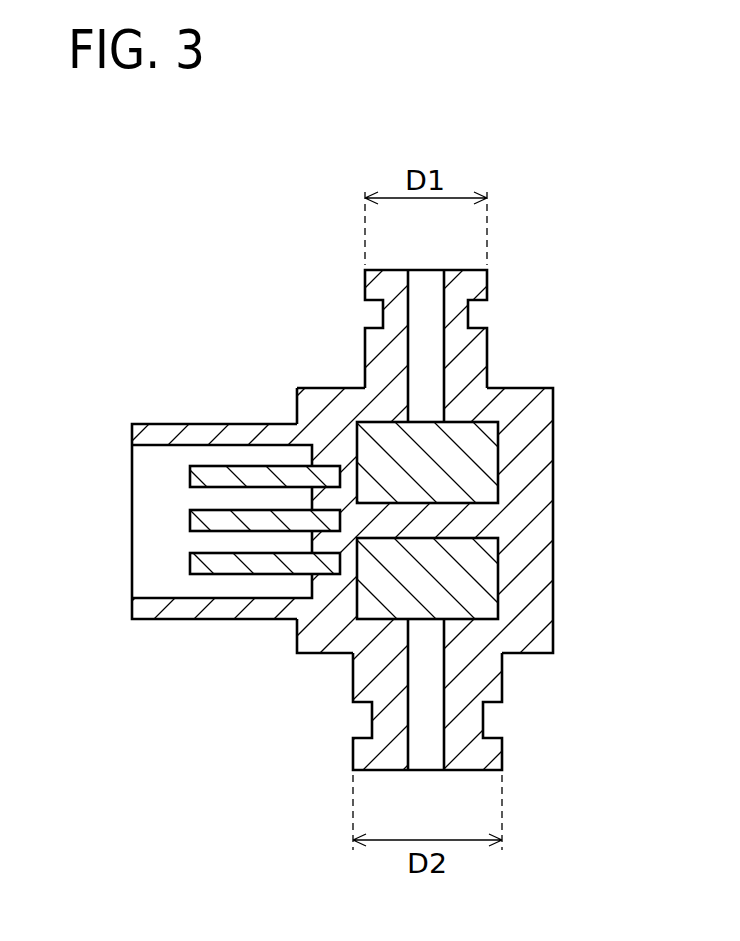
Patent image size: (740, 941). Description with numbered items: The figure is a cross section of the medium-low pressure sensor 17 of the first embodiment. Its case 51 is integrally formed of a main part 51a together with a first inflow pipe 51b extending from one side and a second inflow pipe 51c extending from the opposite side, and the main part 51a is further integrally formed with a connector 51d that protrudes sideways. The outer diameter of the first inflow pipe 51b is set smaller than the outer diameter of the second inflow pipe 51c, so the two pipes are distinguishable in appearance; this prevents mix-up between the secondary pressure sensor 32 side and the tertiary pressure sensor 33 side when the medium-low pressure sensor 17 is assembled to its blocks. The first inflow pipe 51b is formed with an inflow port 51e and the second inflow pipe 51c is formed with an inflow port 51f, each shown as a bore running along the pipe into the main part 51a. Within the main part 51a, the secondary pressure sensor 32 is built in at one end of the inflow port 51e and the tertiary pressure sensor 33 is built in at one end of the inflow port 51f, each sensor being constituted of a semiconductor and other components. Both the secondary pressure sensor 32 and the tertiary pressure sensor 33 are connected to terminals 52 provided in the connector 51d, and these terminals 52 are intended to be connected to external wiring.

The medium-low pressure sensor 17 is at (370, 470).
The case 51 is at (370, 470).
The main part 51a is at (545, 524).
The first inflow pipe 51b is at (483, 349).
The second inflow pipe 51c is at (497, 689).
The connector 51d is at (219, 430).
The inflow port 51e is at (442, 308).
The inflow port 51f is at (441, 751).
The secondary pressure sensor 32 is at (498, 447).
The tertiary pressure sensor 33 is at (498, 572).
The terminals 52 is at (198, 478).